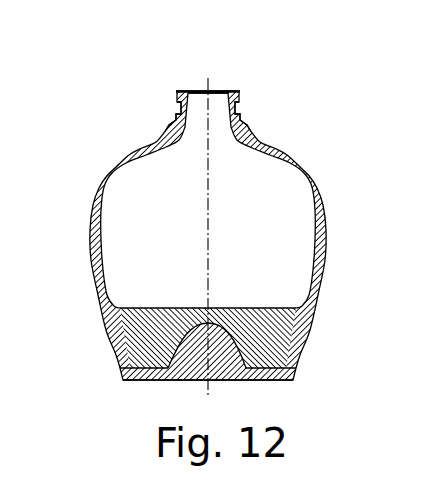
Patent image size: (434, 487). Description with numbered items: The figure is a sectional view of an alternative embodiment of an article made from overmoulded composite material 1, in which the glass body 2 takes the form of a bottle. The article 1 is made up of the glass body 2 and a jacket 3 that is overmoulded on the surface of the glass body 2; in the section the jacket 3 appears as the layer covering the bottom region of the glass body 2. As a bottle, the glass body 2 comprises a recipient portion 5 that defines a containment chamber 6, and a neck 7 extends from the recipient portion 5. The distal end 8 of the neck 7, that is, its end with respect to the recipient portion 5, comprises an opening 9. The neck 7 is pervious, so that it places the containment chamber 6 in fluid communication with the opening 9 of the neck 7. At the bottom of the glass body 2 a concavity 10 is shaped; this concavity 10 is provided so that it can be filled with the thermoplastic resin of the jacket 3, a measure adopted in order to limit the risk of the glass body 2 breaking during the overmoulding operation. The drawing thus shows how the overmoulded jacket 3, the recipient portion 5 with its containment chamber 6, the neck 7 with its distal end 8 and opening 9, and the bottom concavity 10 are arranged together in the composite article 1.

The article made from overmoulded composite material 1 is at (92, 93).
The glass body 2 is at (324, 173).
The jacket 3 is at (114, 381).
The recipient portion 5 is at (323, 247).
The containment chamber 6 is at (240, 269).
The neck 7 is at (240, 119).
The distal end 8 is at (181, 83).
The opening 9 is at (218, 91).
The concavity 10 is at (193, 330).